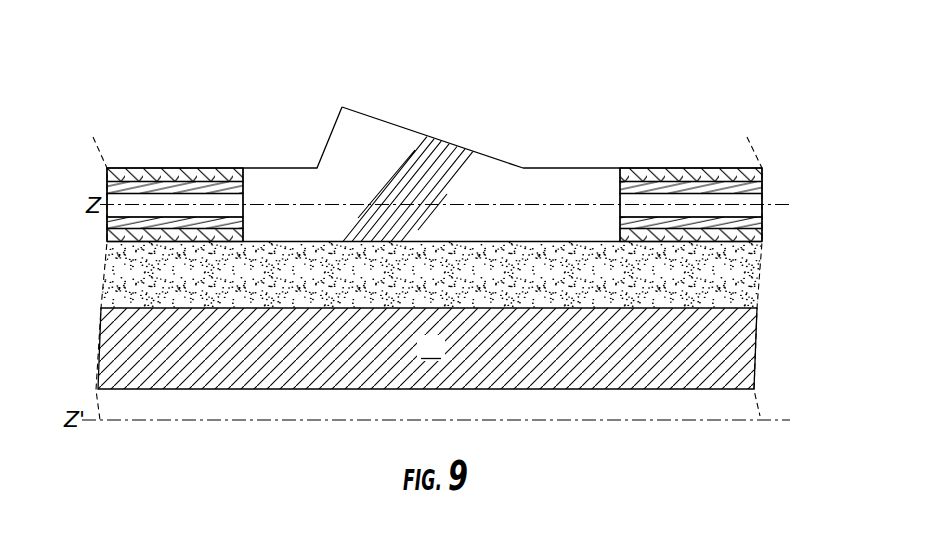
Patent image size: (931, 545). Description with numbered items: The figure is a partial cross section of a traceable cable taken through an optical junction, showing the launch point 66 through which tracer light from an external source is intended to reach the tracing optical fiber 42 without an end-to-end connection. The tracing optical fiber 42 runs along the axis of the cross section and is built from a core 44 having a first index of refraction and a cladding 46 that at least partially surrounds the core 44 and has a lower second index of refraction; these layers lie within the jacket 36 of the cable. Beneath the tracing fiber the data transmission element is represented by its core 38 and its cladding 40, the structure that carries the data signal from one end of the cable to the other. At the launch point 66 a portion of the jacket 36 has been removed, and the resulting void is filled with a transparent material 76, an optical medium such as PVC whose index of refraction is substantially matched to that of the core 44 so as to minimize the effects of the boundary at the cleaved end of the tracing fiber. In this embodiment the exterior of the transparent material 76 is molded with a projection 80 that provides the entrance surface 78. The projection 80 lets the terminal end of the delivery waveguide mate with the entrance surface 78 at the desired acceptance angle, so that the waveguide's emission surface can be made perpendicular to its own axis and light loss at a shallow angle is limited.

The jacket 36 is at (762, 176).
The core 38 is at (747, 405).
The cladding 40 is at (113, 352).
The tracing optical fiber 42 is at (80, 181).
The core 44 is at (762, 198).
The cladding 46 is at (762, 184).
The launch point 66 is at (497, 98).
The transparent material 76 is at (550, 183).
The entrance surface 78 is at (325, 148).
The projection 80 is at (373, 140).